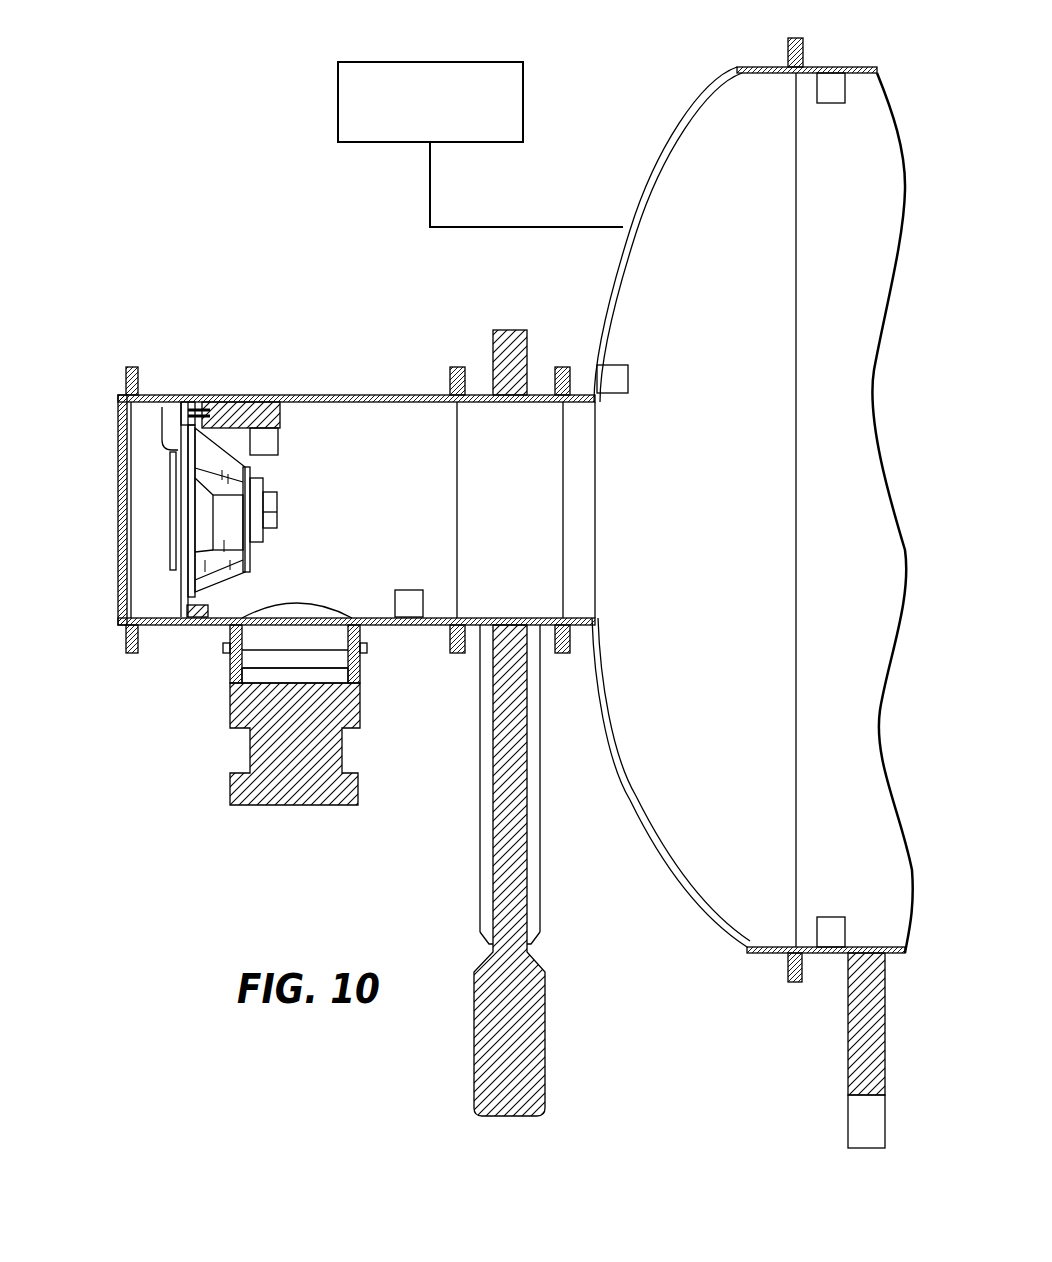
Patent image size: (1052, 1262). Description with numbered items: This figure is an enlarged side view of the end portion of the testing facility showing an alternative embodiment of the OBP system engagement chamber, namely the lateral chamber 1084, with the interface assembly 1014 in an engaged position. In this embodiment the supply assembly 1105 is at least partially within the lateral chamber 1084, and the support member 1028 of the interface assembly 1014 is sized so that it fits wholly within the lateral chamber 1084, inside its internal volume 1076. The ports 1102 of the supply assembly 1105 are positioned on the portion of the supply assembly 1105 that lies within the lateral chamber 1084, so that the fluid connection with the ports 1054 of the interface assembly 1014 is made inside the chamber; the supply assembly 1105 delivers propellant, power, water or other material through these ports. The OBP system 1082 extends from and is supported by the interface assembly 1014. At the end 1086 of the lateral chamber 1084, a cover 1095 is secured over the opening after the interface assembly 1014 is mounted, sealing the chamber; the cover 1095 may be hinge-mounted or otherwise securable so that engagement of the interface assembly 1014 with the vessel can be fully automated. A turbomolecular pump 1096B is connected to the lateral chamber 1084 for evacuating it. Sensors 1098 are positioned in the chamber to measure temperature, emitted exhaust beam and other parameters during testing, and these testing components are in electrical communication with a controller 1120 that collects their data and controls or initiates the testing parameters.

The controller 1120 is at (338, 106).
The sensors 1098 is at (280, 446).
The lateral chamber 1084 is at (323, 395).
The end of lateral chamber 1086 is at (168, 627).
The cover 1095 is at (118, 508).
The supply assembly 1105 is at (242, 398).
The ports 1102 is at (202, 402).
The ports 1054 is at (195, 400).
The support member 1028 is at (182, 463).
The interface assembly 1014 is at (218, 592).
The OBP system 1082 is at (278, 511).
The internal volume 1076 is at (430, 481).
The turbomolecular pump 1096B is at (272, 752).